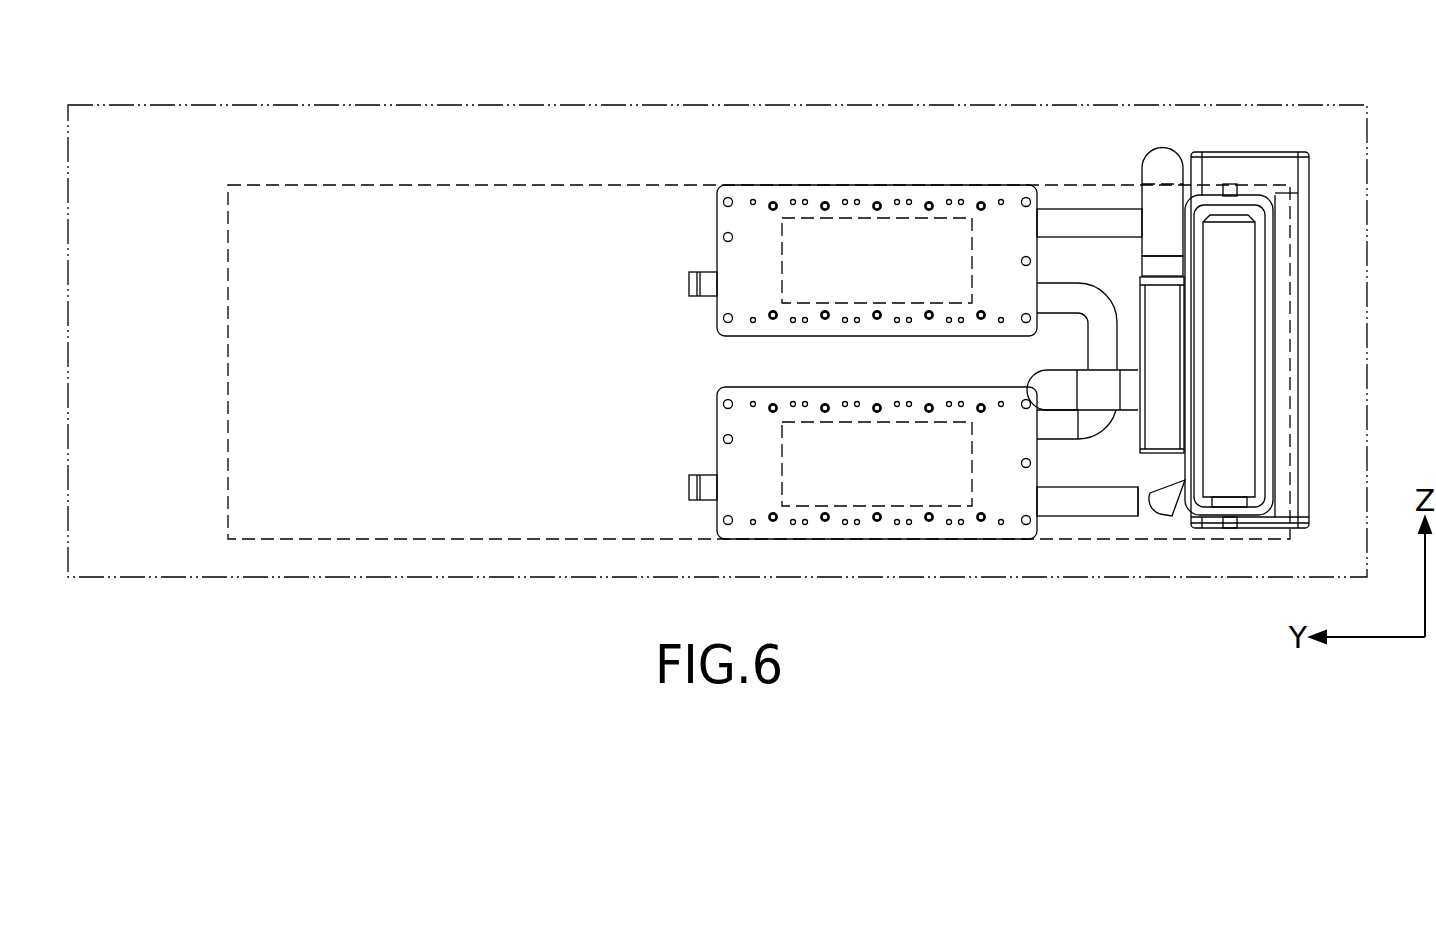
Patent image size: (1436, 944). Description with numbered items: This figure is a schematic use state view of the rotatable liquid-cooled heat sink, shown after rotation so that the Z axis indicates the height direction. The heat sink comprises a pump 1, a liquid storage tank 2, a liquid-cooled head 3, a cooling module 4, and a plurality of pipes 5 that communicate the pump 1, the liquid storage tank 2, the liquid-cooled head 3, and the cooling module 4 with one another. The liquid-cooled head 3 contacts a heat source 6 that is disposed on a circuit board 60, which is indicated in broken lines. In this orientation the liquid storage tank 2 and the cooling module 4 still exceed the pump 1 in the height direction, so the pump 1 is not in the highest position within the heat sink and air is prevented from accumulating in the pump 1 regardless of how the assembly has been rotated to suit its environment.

The pump 1 is at (1156, 419).
The liquid storage tank 2 is at (1249, 156).
The liquid-cooled head 3 is at (723, 307).
The cooling module 4 is at (1305, 352).
The pipes 5 is at (1162, 140).
The heat source 6 is at (843, 238).
The circuit board 60 is at (453, 195).